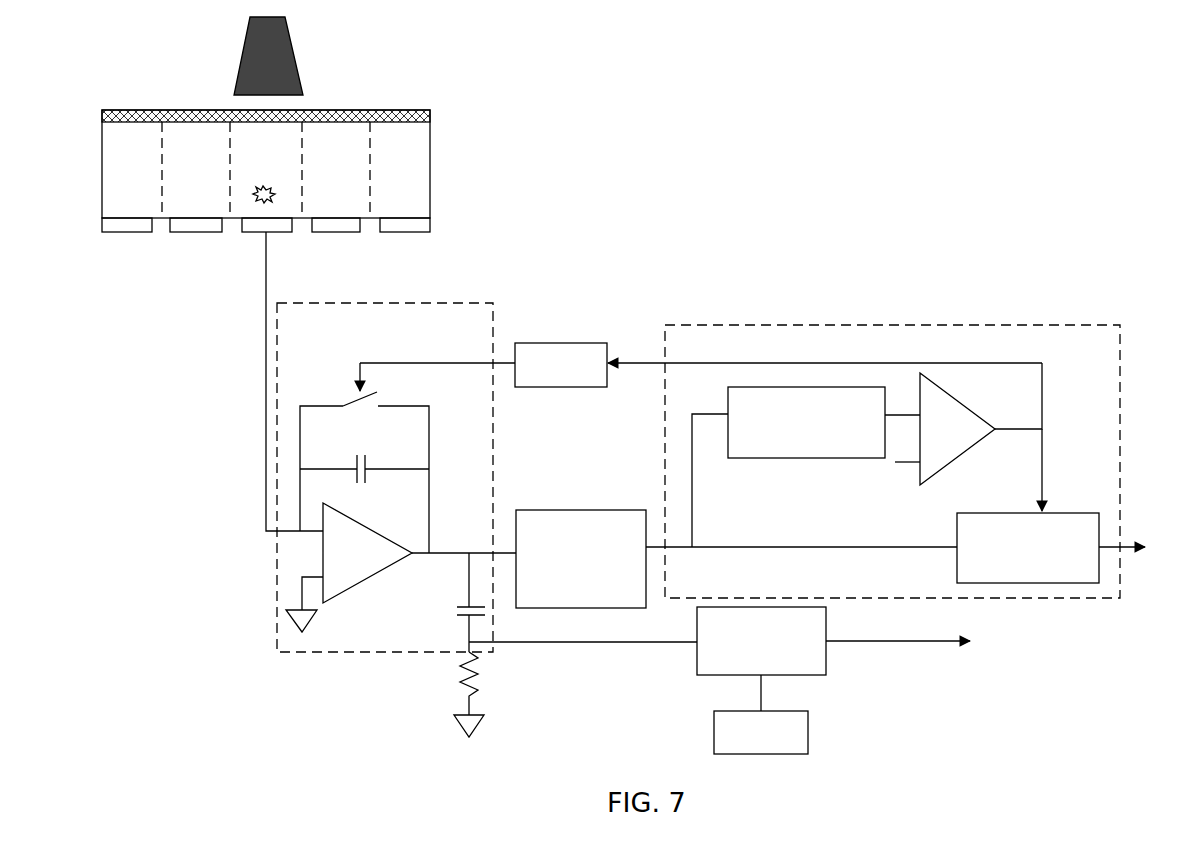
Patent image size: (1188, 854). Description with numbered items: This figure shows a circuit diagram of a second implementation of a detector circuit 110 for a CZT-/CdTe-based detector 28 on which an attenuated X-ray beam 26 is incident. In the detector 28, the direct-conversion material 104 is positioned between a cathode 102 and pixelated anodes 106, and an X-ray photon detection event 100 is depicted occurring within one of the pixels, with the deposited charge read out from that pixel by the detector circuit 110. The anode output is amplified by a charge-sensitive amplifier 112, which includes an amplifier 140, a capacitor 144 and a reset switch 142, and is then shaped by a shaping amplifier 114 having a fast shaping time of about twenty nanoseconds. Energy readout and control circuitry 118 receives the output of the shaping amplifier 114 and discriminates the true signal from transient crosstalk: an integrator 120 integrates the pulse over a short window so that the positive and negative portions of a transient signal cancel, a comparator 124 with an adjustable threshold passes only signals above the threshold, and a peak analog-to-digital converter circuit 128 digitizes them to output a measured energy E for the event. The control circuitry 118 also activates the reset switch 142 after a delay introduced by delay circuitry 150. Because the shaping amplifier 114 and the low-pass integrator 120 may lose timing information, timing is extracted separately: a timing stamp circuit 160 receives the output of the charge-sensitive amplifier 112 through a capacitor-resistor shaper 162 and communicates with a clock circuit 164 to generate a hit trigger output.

The attenuated X-ray beam 26 is at (312, 62).
The detector 28 is at (479, 108).
The X-ray photon detection event 100 is at (281, 196).
The cathode 102 is at (100, 115).
The direct-conversion material 104 is at (100, 172).
The anodes 106 is at (100, 222).
The detector circuit 110 is at (828, 232).
The charge-sensitive amplifier 112 is at (472, 303).
The shaping amplifier 114 is at (581, 510).
The energy readout and control circuitry 118 is at (895, 325).
The integrator 120 is at (808, 460).
The comparator 124 is at (962, 397).
The peak analog-to-digital converter (ADC) circuit 128 is at (1100, 578).
The amplifier 140 is at (367, 586).
The reset switch 142 is at (330, 393).
The capacitor 144 is at (338, 458).
The delay circuitry 150 is at (565, 343).
The timing stamp circuit 160 is at (827, 662).
The capacitor-resistor (CR) shaper 162 is at (497, 656).
The clock circuit 164 is at (810, 735).